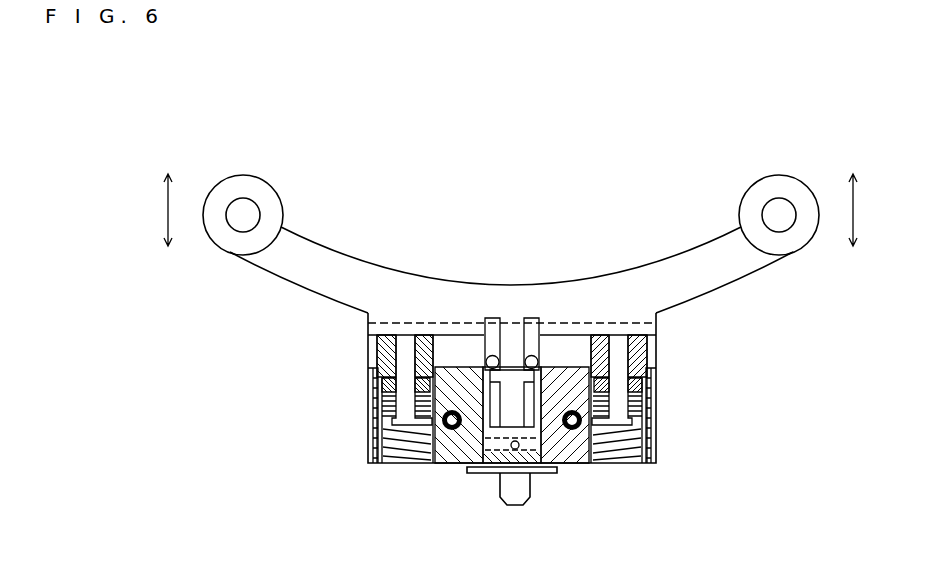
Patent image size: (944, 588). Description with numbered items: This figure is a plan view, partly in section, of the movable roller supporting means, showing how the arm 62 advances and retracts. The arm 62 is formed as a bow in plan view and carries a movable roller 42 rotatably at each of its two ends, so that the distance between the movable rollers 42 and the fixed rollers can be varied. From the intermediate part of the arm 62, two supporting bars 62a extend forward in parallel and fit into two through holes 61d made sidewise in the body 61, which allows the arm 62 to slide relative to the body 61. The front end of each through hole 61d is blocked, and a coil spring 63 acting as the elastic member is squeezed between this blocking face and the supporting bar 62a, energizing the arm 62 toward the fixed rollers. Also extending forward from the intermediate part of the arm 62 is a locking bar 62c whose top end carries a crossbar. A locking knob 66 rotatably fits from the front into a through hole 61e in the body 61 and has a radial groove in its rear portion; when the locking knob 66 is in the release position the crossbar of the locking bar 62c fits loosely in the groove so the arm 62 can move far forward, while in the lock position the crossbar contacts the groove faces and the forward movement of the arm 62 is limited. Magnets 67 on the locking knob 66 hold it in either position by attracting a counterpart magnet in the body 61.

The movable roller 42 is at (242, 177).
The body 61 is at (657, 412).
The through holes 61d is at (382, 465).
The through hole 61e is at (552, 440).
The arm 62 is at (492, 285).
The supporting bars 62a is at (405, 360).
The locking bar 62c is at (514, 343).
The coil spring 63 is at (433, 463).
The locking knob 66 is at (513, 507).
The magnets 67 is at (512, 448).